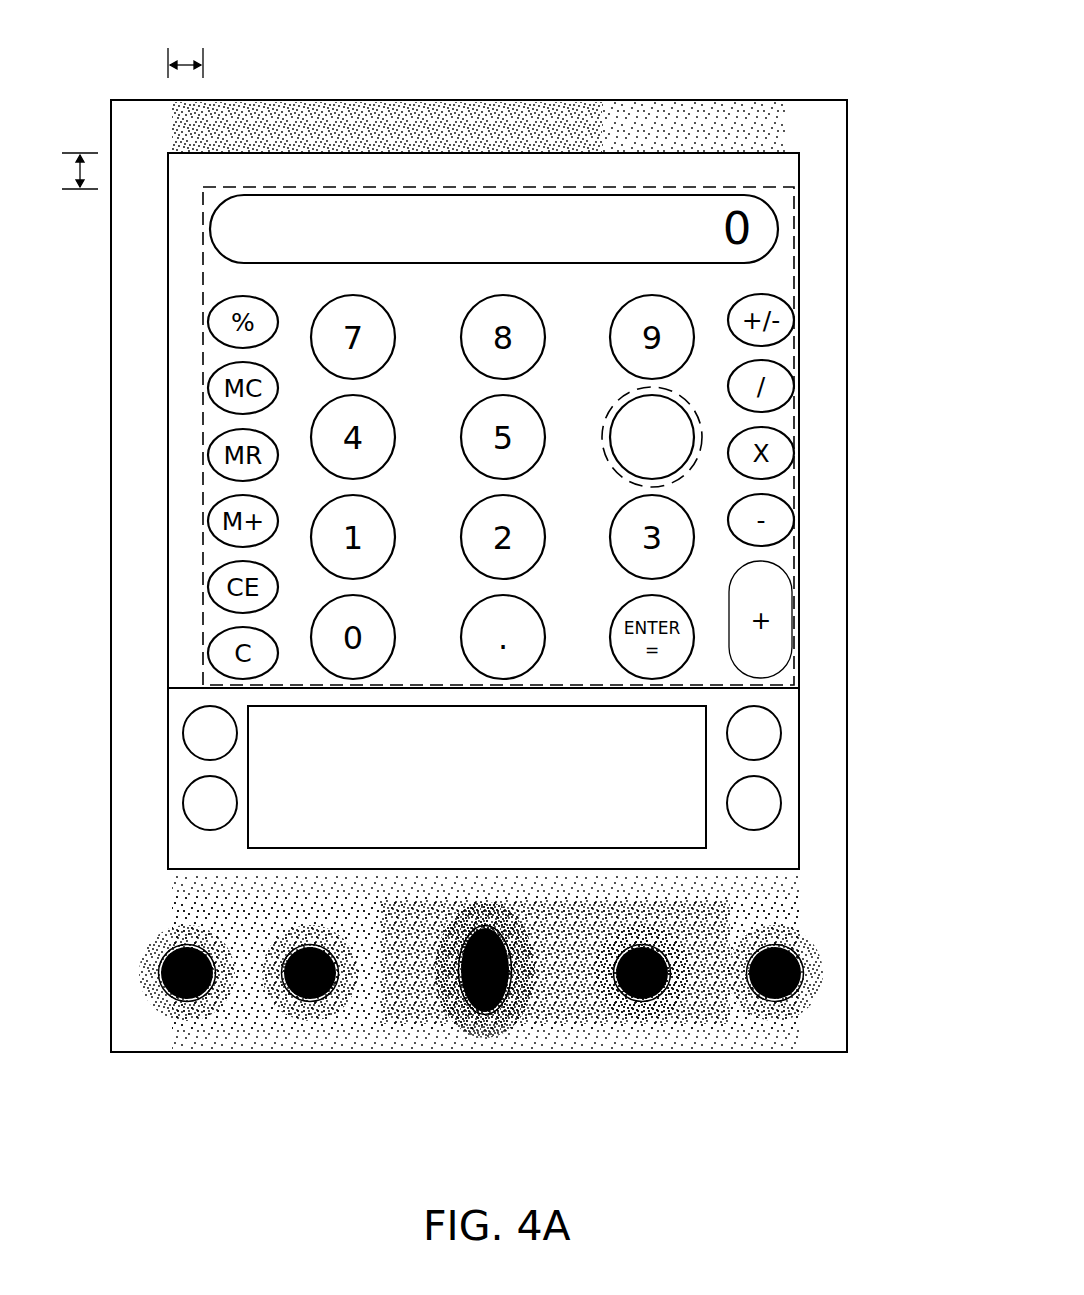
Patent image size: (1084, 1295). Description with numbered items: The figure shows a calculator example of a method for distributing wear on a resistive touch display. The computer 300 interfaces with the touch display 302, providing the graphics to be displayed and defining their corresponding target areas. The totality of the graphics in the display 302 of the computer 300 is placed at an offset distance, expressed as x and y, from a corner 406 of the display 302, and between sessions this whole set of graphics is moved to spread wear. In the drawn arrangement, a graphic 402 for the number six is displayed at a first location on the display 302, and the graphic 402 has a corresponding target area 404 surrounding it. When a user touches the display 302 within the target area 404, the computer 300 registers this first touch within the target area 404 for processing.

The computer system 300 is at (237, 100).
The touch display 302 is at (577, 153).
The graphic 402 is at (688, 400).
The target area 404 is at (698, 455).
The corner of the display 406 is at (168, 153).